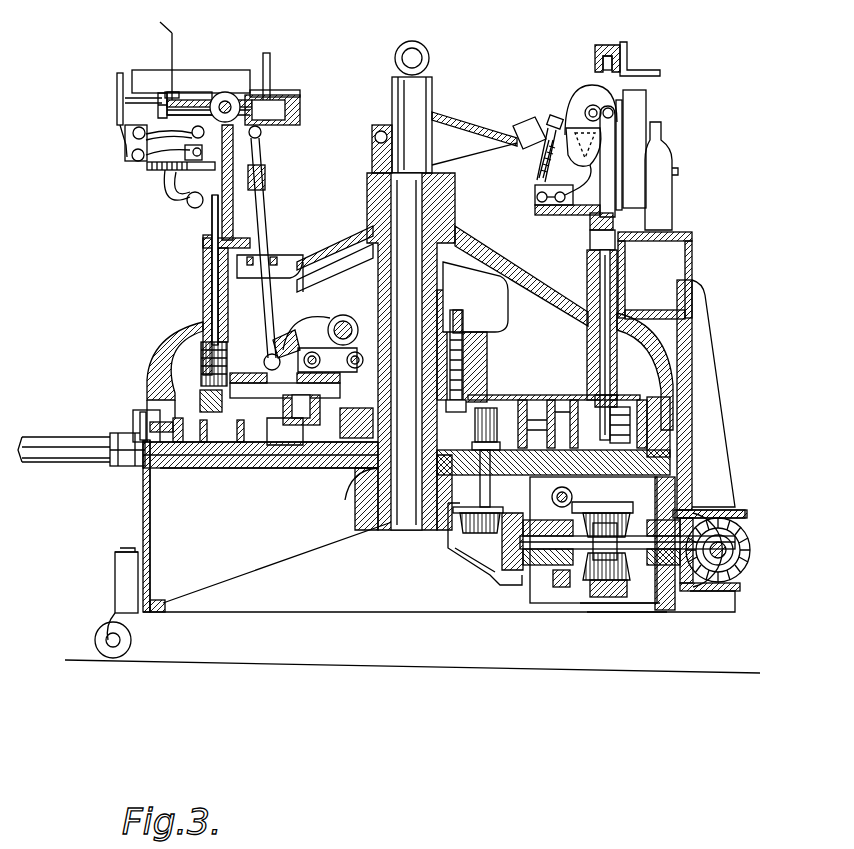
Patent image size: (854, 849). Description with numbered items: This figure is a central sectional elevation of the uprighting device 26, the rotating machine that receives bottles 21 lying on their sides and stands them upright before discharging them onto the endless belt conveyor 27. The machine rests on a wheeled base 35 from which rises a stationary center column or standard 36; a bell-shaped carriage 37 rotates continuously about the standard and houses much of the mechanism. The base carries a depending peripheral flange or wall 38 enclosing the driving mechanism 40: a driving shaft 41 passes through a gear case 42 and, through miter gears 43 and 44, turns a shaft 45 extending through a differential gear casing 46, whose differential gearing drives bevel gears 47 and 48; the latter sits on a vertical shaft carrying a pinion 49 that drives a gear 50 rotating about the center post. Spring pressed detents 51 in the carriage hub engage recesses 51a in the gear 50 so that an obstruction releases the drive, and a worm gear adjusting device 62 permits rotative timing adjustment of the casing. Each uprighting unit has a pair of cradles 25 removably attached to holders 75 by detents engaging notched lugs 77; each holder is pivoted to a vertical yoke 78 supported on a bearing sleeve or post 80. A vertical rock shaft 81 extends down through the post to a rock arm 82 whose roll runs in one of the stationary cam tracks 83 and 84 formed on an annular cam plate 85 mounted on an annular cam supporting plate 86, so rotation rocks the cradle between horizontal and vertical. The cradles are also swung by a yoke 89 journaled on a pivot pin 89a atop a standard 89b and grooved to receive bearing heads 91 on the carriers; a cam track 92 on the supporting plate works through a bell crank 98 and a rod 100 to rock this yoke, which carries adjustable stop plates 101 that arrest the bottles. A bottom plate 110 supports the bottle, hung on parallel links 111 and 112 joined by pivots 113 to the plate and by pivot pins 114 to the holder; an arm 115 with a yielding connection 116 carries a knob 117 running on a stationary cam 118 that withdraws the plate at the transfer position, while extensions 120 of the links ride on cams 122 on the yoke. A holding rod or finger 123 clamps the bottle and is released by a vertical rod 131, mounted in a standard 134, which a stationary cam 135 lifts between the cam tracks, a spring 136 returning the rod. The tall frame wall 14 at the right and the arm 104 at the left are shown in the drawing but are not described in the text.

The frame wall 14 is at (713, 368).
The bottle 21 is at (667, 198).
The cradle 25 is at (196, 68).
The uprighting device 26 is at (130, 380).
The endless belt conveyor 27 is at (676, 234).
The wheeled base 35 is at (295, 470).
The center column or standard 36 is at (431, 88).
The carriage 37 is at (536, 265).
The depending peripheral flange or wall 38 is at (152, 533).
The driving mechanism 40 is at (579, 608).
The driving shaft 41 is at (748, 530).
The gear case 42 is at (736, 590).
The miter gear 43 is at (722, 580).
The miter gear 44 is at (700, 575).
The shaft 45 is at (674, 512).
The differential gear casing 46 is at (615, 607).
The bevel gear 47 is at (505, 565).
The bevel gear 48 is at (478, 535).
The pinion 49 is at (510, 420).
The gear 50 is at (344, 430).
The spring pressed detent 51 is at (500, 400).
The recess 51a is at (520, 416).
The worm gear adjusting device 62 is at (560, 589).
The holder 75 is at (206, 100).
The notched lug 77 is at (147, 109).
The vertical yoke 78 is at (607, 153).
The bearing sleeve or post 80 is at (589, 278).
The vertical rock shaft 81 is at (602, 333).
The rock arm 82 is at (614, 398).
The cam track 83 is at (630, 438).
The cam track 84 is at (575, 491).
The annular cam plate 85 is at (215, 466).
The annular cam supporting plate 86 is at (257, 464).
The yoke 89 is at (283, 120).
The pivot pin 89a is at (231, 107).
The standard 89b is at (264, 178).
The bearing ball or head 91 is at (602, 64).
The cam track 92 is at (283, 420).
The bell crank 98 is at (318, 330).
The rod 100 is at (270, 236).
The stop plate 101 is at (272, 76).
The operating arm 104 is at (58, 436).
The bottom plate 110 is at (117, 100).
The parallel link 111 is at (148, 146).
The parallel link 112 is at (152, 164).
The pivot 113 is at (540, 201).
The pivot pin 114 is at (192, 131).
The arm 115 is at (555, 110).
The yielding connection 116 is at (537, 172).
The knob 117 is at (165, 203).
The stationary cam 118 is at (512, 130).
The extension 120 is at (581, 106).
The cam 122 is at (584, 161).
The holding rod or finger 123 is at (157, 53).
The vertical rod 131 is at (211, 227).
The standard 134 is at (203, 266).
The stationary cam 135 is at (610, 418).
The spring 136 is at (204, 373).